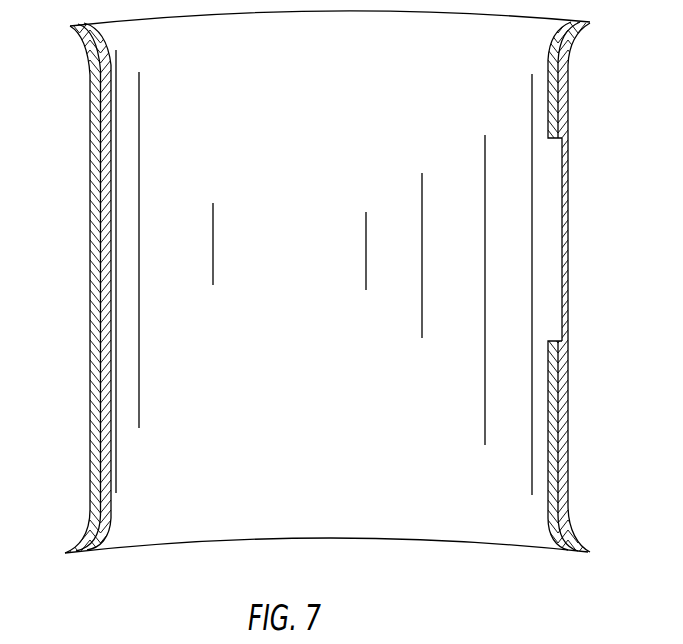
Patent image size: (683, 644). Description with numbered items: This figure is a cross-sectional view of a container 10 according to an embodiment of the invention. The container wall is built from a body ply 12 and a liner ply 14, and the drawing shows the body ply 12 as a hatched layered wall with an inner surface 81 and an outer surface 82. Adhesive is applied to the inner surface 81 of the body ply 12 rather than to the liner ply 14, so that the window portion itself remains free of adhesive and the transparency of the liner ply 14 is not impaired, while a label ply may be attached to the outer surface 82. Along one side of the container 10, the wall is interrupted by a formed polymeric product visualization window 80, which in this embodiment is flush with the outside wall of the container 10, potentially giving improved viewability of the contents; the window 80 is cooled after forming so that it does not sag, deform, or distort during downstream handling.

The container 10 is at (63, 271).
The body ply 12 is at (581, 465).
The liner ply 14 is at (548, 471).
The product visualization window 80 is at (585, 257).
The inner surface of the body ply 81 is at (548, 517).
The outer surface of the body ply 82 is at (568, 490).